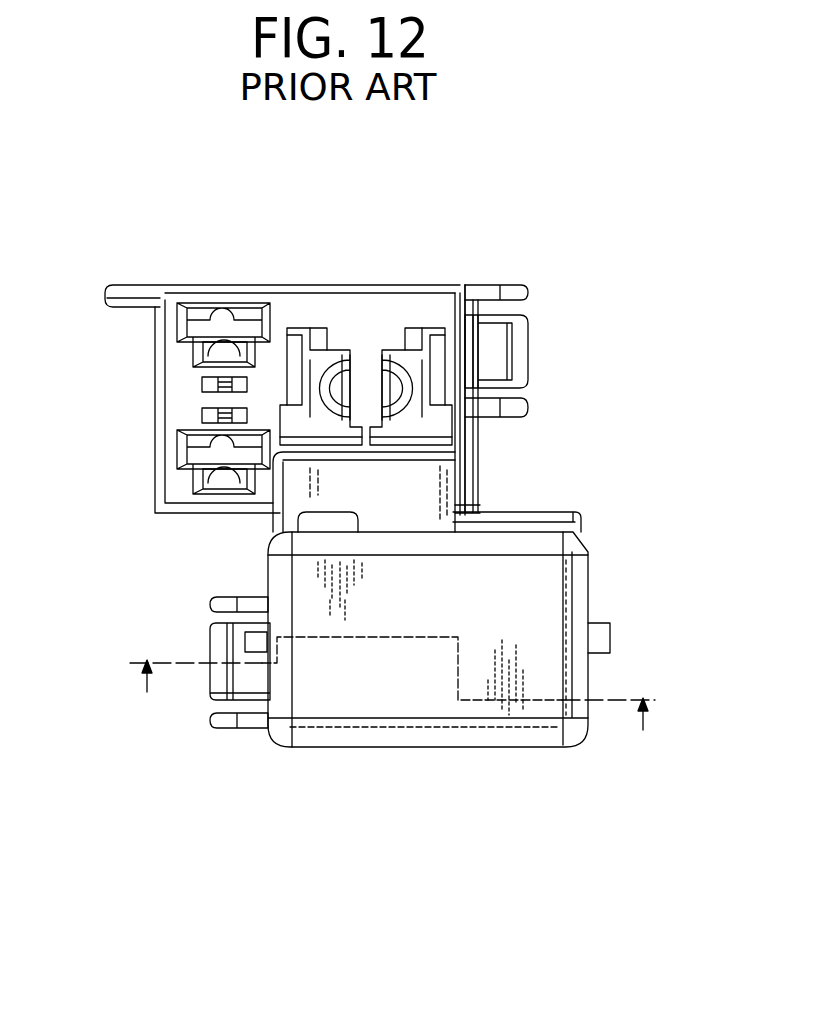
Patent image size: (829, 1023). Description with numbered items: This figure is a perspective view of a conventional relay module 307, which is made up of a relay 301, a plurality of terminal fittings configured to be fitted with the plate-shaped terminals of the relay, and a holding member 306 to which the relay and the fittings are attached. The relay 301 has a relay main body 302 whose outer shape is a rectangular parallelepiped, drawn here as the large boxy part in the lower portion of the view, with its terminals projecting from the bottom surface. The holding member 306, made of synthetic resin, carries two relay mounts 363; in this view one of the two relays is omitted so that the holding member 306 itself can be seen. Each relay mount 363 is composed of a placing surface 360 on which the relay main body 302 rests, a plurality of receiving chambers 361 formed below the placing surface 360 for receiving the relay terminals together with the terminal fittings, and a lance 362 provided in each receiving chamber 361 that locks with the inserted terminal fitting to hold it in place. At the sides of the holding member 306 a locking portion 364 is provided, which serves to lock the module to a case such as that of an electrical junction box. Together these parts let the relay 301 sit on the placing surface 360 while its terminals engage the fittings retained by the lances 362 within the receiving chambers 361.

The relay 301 is at (356, 758).
The relay main body 302 is at (445, 746).
The holding member 306 is at (203, 286).
The relay module 307 is at (717, 272).
The placing surface 360 is at (395, 303).
The receiving chamber 361 is at (253, 455).
The lance 362 is at (212, 467).
The relay mount 363 is at (479, 522).
The locking portion 364 is at (530, 350).